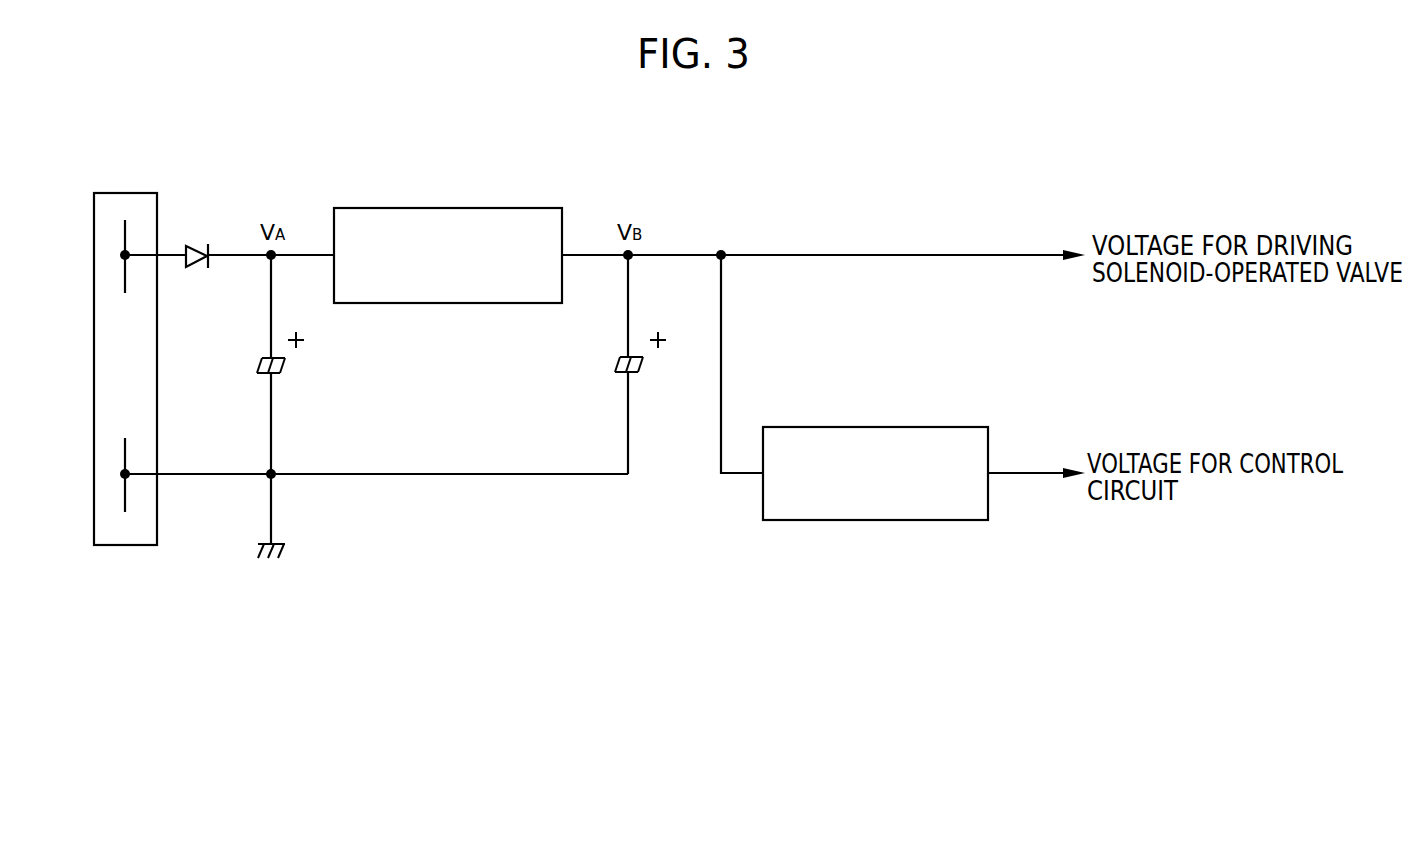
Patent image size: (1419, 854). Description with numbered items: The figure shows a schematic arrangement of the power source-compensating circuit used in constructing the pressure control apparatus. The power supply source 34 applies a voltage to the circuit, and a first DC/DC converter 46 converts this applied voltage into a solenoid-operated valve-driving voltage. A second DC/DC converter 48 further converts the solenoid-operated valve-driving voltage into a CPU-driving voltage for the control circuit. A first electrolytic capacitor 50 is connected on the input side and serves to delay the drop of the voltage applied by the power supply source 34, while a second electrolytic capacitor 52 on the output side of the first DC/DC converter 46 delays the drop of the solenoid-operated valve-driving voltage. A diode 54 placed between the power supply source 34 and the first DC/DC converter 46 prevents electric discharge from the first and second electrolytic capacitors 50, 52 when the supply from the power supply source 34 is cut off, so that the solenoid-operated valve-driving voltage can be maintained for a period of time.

The power supply source 34 is at (138, 193).
The first DC/DC converter 46 is at (529, 208).
The second DC/DC converter 48 is at (937, 427).
The first electrolytic capacitor 50 is at (265, 357).
The second electrolytic capacitor 52 is at (620, 357).
The diode 54 is at (200, 250).